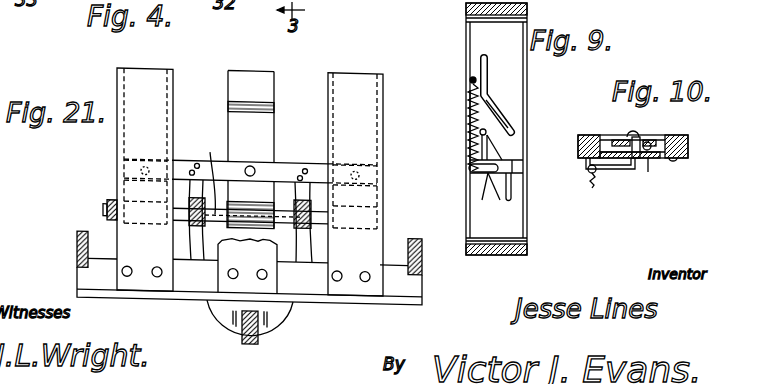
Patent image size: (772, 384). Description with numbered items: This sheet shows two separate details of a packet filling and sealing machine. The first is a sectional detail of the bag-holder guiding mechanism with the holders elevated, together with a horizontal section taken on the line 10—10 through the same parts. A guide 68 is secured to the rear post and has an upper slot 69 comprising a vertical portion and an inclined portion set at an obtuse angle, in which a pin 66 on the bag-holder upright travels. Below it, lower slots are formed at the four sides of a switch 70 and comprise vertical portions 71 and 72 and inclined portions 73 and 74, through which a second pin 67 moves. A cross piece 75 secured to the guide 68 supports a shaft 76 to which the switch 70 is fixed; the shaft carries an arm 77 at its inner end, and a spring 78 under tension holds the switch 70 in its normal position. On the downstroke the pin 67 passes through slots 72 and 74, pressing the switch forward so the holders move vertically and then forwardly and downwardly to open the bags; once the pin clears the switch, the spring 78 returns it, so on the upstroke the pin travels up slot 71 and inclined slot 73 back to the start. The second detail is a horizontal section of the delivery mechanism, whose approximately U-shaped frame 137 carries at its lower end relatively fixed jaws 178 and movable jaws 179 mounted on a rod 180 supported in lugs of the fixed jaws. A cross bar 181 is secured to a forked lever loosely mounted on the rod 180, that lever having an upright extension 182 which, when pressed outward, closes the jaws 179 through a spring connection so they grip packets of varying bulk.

In FIG. 9, the section line 10— 10 is at (467, 168).
In FIG. 9, the pin 66 is at (480, 56).
In FIG. 9, the pin 67 is at (468, 123).
In FIG. 9, the guide 68 is at (520, 80).
In FIG. 10, the guide 68 is at (689, 138).
In FIG. 9, the upper slot 69 is at (505, 117).
In FIG. 10, the switch 70 is at (662, 176).
In FIG. 9, the vertical portion 71 is at (511, 200).
In FIG. 10, the vertical portion 71 is at (660, 136).
In FIG. 9, the vertical portion 72 is at (470, 145).
In FIG. 10, the vertical portion 72 is at (607, 137).
In FIG. 9, the inclined portion 73 is at (505, 161).
In FIG. 9, the inclined portion 74 is at (489, 200).
In FIG. 9, the cross piece 75 is at (522, 182).
In FIG. 10, the cross piece 75 is at (689, 155).
In FIG. 10, the shaft 76 is at (631, 134).
In FIG. 9, the arm 77 is at (478, 177).
In FIG. 10, the arm 77 is at (615, 170).
In FIG. 9, the spring 78 is at (469, 98).
In FIG. 10, the spring 78 is at (590, 191).
In FIG. 21, the frame 137 is at (421, 289).
In FIG. 21, the jaw 178 is at (155, 77).
In FIG. 21, the jaw 179 is at (258, 75).
In FIG. 21, the rod 180 is at (250, 196).
In FIG. 21, the cross bar 181 is at (280, 158).
In FIG. 21, the upright extension 182 is at (243, 341).